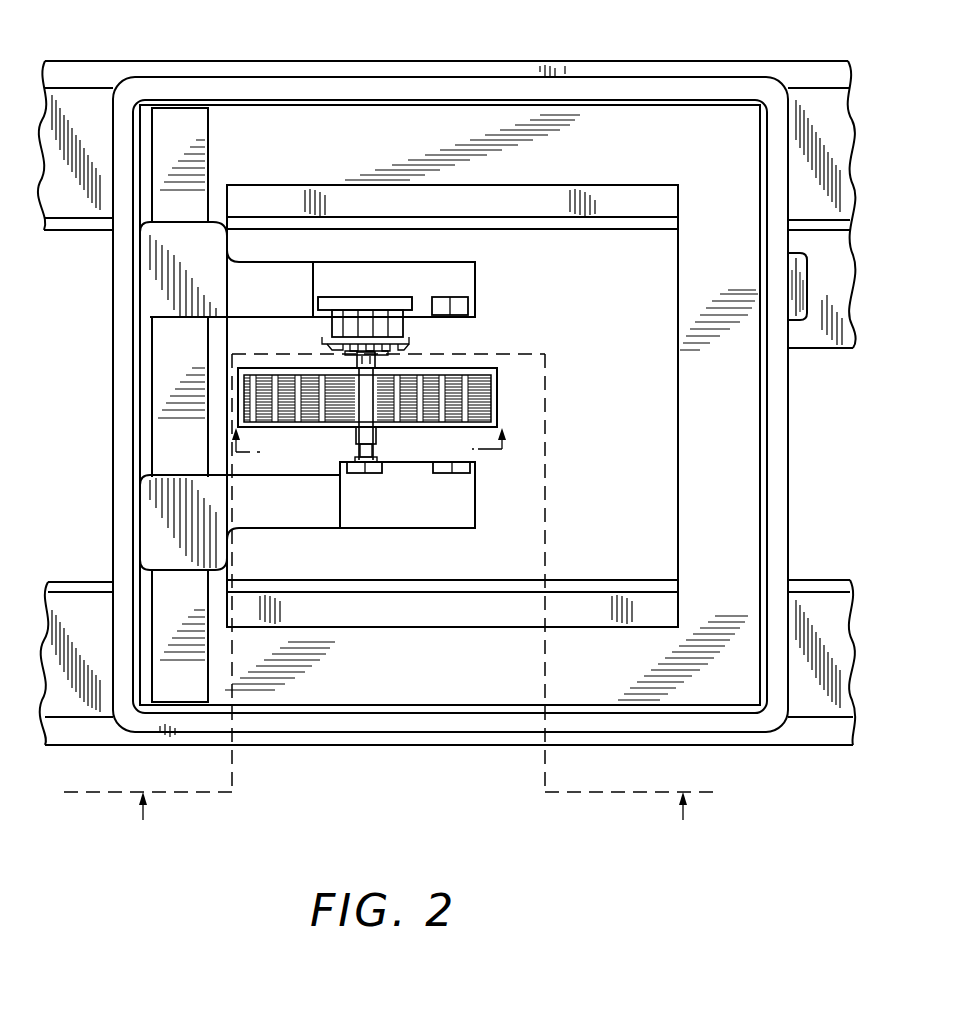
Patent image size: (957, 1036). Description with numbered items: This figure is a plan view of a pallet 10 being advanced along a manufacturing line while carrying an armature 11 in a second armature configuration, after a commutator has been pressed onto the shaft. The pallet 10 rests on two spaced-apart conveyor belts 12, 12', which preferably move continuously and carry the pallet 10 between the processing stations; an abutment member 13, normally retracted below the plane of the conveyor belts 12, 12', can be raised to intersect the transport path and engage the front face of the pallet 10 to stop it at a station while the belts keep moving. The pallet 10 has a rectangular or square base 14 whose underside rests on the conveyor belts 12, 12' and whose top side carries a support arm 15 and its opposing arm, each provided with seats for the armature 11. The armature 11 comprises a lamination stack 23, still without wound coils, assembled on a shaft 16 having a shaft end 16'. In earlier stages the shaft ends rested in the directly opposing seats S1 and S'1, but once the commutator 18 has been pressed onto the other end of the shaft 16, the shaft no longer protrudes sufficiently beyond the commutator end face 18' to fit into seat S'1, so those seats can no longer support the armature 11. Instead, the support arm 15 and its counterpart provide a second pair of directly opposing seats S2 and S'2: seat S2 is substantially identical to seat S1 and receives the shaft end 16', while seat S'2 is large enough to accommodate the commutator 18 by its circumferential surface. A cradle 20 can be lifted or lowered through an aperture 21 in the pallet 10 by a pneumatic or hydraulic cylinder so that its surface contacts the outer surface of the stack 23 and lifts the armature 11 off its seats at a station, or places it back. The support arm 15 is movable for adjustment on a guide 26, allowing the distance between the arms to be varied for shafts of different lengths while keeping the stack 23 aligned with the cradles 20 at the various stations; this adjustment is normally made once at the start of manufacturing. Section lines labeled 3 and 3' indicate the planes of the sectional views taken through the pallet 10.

The pallet 10 is at (501, 36).
The conveyor belt 12 is at (447, 183).
The conveyor belt 12' is at (451, 631).
The abutment member 13 is at (795, 290).
The base 14 is at (643, 112).
The support arm 15 is at (285, 284).
The shaft 16 is at (344, 445).
The shaft end 16' is at (407, 495).
The commutator 18 is at (397, 326).
The commutator end face 18' is at (394, 289).
The cradle 20 is at (491, 370).
The aperture 21 is at (628, 405).
The lamination stack 23 is at (416, 424).
The guide 26 is at (168, 383).
The armature 11 is at (386, 433).
The seat S1 is at (454, 473).
The seat S2 is at (379, 465).
The seat S'1 is at (500, 291).
The seat S'2 is at (423, 272).
The section line 3- 3 is at (391, 606).
The section line 3'- 3' is at (384, 446).